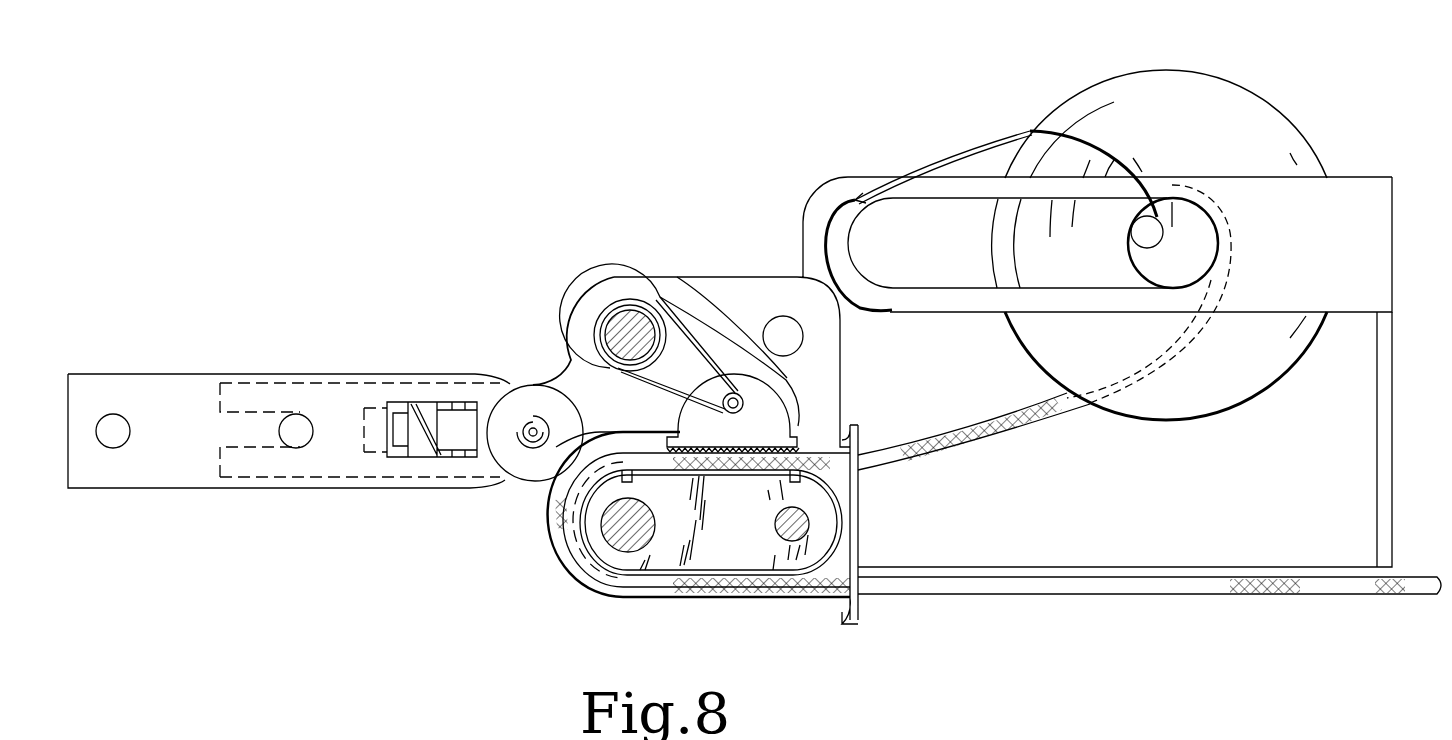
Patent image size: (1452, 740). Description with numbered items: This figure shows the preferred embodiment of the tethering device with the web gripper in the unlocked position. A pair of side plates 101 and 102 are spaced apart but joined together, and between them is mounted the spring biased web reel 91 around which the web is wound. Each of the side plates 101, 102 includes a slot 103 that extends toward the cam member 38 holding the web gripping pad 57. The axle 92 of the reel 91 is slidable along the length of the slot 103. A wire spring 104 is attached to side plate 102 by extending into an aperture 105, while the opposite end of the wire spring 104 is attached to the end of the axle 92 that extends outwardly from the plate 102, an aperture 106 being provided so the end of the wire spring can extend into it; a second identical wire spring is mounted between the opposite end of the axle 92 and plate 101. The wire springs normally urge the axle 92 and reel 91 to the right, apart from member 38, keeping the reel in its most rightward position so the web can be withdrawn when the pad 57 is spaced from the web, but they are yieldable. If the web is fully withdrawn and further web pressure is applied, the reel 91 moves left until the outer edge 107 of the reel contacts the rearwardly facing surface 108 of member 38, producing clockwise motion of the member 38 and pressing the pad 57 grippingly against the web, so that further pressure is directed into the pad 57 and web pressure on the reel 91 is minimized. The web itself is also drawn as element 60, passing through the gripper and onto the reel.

The cam member 38 is at (658, 300).
The web gripping pad 57 is at (738, 438).
The strap 60 is at (1180, 590).
The web reel 91 is at (1250, 105).
The axle 92 is at (1150, 265).
The side plate 101 is at (1352, 447).
The side plate 102 is at (1370, 270).
The slot 103 is at (903, 267).
The wire spring 104 is at (965, 147).
The aperture 105 is at (853, 195).
The aperture 106 is at (1160, 238).
The outer edge of the reel 107 is at (1052, 106).
The rearwardly facing surface 108 is at (677, 278).